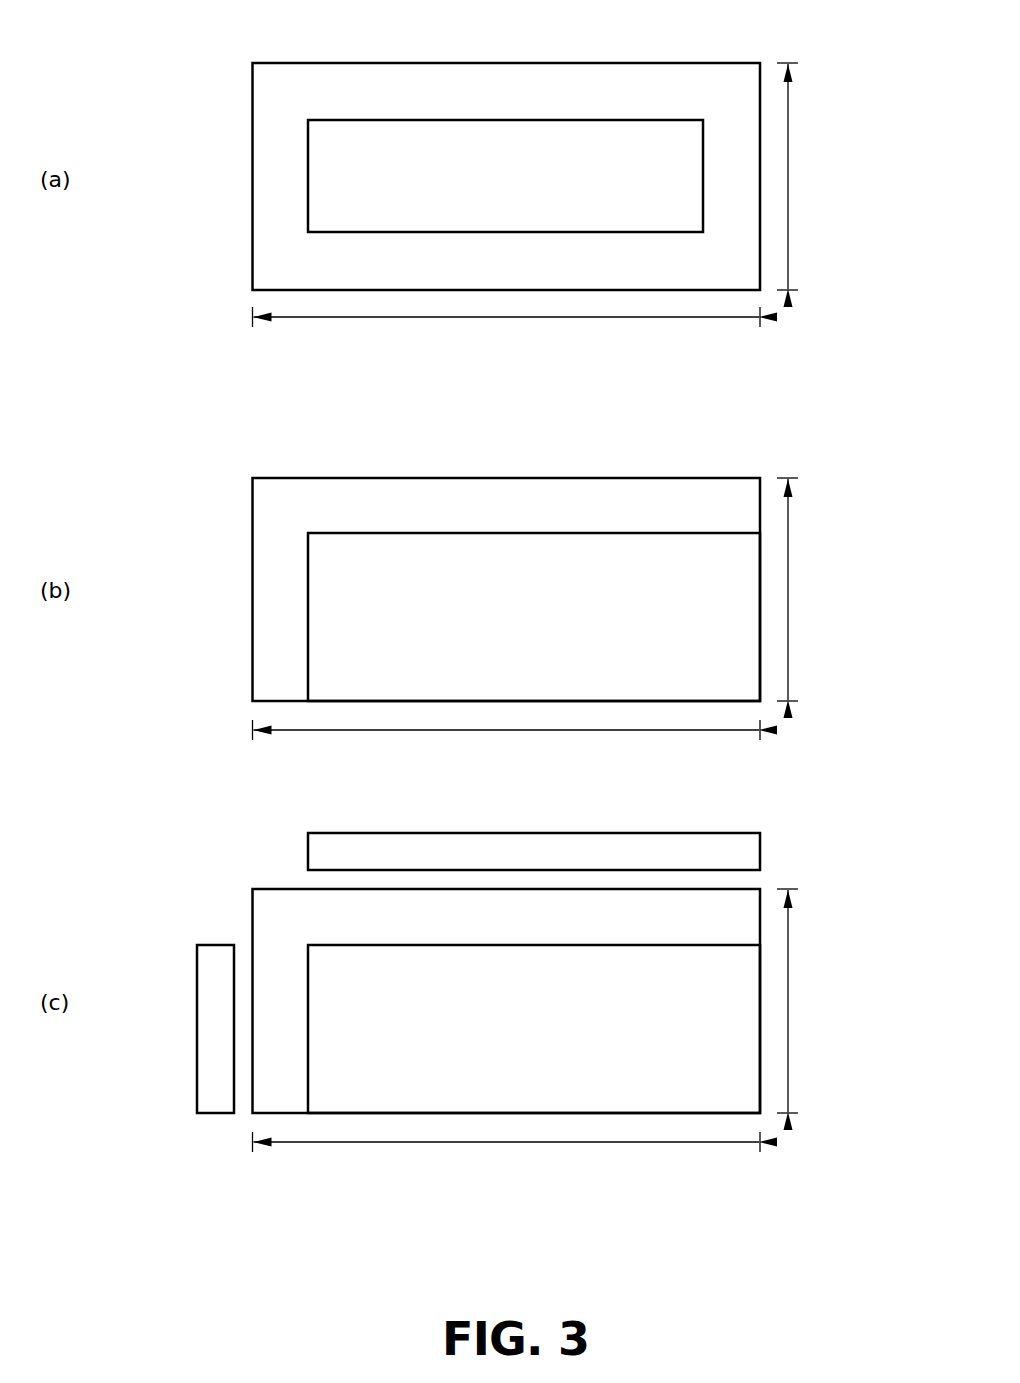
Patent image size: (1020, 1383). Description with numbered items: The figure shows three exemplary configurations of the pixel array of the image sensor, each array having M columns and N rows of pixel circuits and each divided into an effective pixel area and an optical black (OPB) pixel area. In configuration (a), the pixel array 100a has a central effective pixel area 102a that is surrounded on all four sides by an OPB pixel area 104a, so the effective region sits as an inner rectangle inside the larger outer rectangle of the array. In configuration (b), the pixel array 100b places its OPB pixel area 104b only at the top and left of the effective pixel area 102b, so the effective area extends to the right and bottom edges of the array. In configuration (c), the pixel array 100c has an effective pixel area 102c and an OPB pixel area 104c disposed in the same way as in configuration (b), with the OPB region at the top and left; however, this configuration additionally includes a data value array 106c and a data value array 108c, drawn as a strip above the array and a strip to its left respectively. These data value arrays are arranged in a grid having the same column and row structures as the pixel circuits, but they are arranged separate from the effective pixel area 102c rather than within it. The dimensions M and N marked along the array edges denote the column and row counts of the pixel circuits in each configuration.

The pixel array 100a is at (578, 182).
The effective pixel area 102a is at (609, 120).
The OPB pixel area 104a is at (440, 63).
The pixel array 100b is at (580, 594).
The effective pixel area 102b is at (608, 533).
The OPB pixel area 104b is at (440, 477).
The pixel array 100c is at (507, 991).
The effective pixel area 102c is at (695, 945).
The OPB pixel area 104c is at (253, 889).
The data value array 106c is at (308, 847).
The data value array 108c is at (197, 1020).